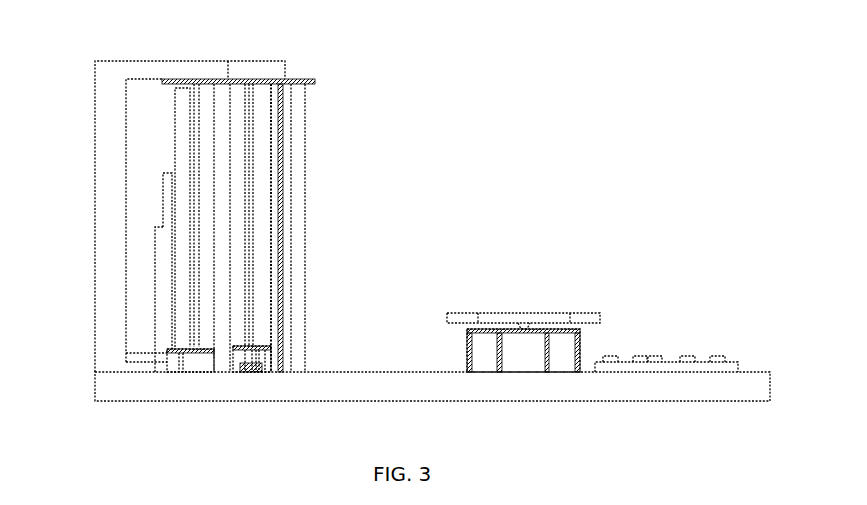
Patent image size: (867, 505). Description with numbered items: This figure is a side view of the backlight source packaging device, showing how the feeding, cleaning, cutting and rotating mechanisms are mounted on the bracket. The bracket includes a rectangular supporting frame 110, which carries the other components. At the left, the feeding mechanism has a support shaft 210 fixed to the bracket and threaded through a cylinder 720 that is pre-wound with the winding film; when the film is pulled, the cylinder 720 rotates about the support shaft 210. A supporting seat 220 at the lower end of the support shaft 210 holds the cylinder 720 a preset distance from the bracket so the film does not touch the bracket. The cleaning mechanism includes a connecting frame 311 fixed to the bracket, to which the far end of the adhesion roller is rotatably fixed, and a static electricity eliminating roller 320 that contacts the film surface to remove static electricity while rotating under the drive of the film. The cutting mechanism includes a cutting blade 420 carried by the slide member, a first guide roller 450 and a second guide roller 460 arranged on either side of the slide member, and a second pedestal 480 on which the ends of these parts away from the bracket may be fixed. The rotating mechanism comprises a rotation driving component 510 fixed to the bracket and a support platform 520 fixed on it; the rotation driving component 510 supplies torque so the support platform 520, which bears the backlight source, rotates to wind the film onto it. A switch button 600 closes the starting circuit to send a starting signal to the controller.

The rectangular supporting frame 110 is at (359, 374).
The support shaft 210 is at (163, 203).
The supporting seat 220 is at (150, 352).
The connecting frame 311 is at (199, 78).
The static electricity eliminating roller 320 is at (183, 140).
The cutting blade 420 is at (262, 372).
The first guide roller 450 is at (205, 163).
The second guide roller 460 is at (300, 185).
The second pedestal 480 is at (311, 80).
The rotation driving component 510 is at (517, 360).
The support platform 520 is at (506, 313).
The switch button 600 is at (648, 356).
The cylinder 720 is at (163, 246).